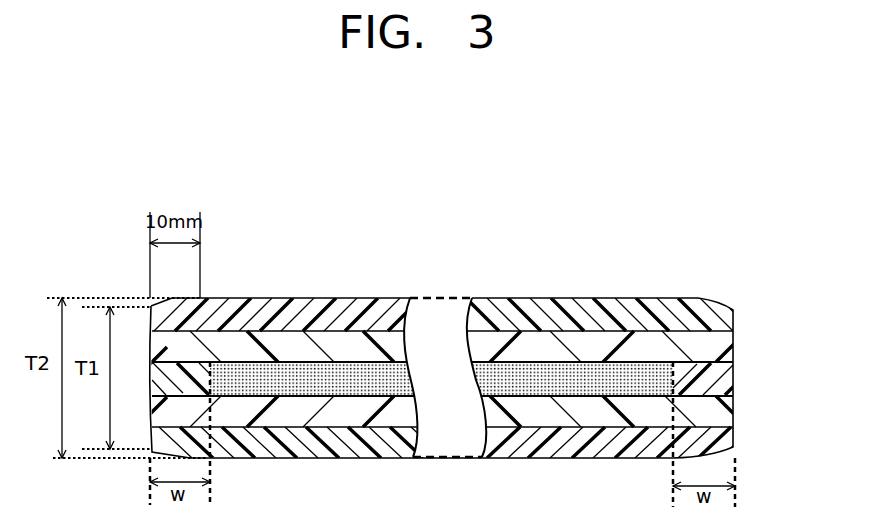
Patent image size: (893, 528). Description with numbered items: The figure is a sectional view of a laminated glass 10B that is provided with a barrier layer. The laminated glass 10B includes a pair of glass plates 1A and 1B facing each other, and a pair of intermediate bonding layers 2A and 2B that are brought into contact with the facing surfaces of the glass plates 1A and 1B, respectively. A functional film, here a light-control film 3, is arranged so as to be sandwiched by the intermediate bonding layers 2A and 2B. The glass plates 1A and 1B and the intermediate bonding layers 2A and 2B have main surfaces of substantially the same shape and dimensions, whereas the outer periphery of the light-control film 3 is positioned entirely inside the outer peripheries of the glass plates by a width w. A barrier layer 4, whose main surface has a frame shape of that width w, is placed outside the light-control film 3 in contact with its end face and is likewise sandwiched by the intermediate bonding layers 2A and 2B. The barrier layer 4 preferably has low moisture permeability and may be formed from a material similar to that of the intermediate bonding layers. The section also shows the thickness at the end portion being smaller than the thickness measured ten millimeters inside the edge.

The laminated glass 10B is at (515, 278).
The glass plate 1A is at (733, 448).
The glass plate 1B is at (725, 322).
The intermediate bonding layer 2A is at (726, 408).
The intermediate bonding layer 2B is at (728, 350).
The light-control film 3 is at (655, 378).
The barrier layer 4 is at (728, 382).